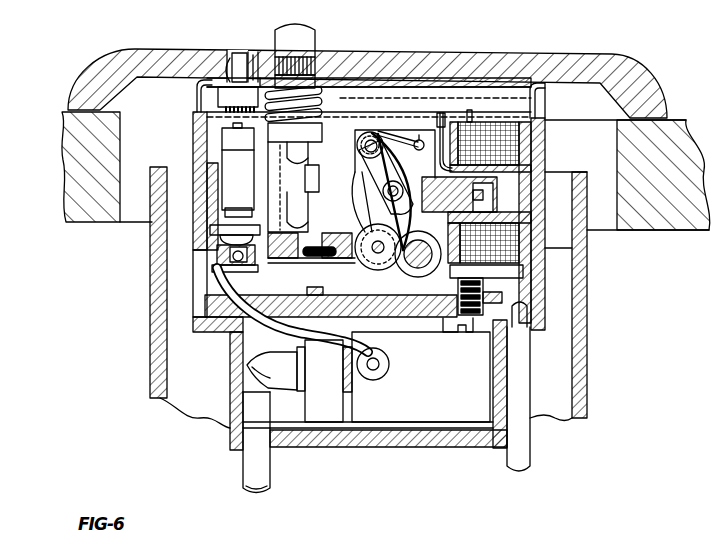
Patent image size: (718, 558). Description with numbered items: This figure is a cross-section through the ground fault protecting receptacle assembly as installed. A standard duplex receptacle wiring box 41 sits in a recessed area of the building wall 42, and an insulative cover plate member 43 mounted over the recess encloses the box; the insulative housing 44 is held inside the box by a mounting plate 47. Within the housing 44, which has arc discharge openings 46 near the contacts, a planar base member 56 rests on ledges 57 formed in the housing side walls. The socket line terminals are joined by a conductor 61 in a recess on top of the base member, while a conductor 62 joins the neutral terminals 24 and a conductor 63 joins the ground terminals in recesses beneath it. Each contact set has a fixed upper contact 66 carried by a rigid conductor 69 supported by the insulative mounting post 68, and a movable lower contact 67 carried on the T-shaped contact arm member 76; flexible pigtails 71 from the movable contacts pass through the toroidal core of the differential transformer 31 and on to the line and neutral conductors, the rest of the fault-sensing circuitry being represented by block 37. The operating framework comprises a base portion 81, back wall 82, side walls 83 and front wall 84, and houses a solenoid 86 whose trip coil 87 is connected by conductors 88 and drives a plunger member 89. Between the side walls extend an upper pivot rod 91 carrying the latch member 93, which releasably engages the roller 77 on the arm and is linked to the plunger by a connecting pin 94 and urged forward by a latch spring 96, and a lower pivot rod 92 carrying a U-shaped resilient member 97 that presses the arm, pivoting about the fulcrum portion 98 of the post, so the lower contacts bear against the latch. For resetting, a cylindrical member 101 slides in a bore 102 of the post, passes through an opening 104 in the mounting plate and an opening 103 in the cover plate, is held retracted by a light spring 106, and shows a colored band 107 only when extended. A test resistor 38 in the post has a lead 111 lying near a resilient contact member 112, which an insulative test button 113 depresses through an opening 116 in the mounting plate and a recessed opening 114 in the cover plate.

The neutral terminal 24 is at (645, 2).
The differential transformer 31 is at (327, 417).
The block 37 is at (375, 405).
The resistor 38 is at (232, 153).
The receptacle wiring box 41 is at (155, 323).
The building wall 42 is at (93, 224).
The cover plate member 43 is at (136, 50).
The housing 44 is at (230, 442).
The arc discharge openings 46 is at (193, 287).
The mounting plate 47 is at (541, 98).
The base member 56 is at (297, 297).
The ledges 57 is at (217, 330).
The conductor 61 is at (356, 268).
The conductor 62 is at (405, 330).
The conductor 63 is at (520, 318).
The fixed upper contact 66 is at (215, 230).
The movable lower contact 67 is at (212, 258).
The insulative mounting post 68 is at (289, 177).
The rigid conductors 69 is at (203, 188).
The flexible conductive pigtails 71 is at (277, 328).
The contact arm member 76 is at (358, 233).
The roller 77 is at (372, 197).
The base portion 81 is at (508, 290).
The back wall 82 is at (546, 248).
The side walls 83 is at (432, 133).
The front wall 84 is at (484, 292).
The solenoid 86 is at (521, 148).
The trip coil 87 is at (491, 133).
The conductors 88 is at (470, 110).
The plunger member 89 is at (545, 173).
The upper pivot rod 91 is at (372, 132).
The lower pivot rod 92 is at (420, 282).
The latch member 93 is at (356, 167).
The connecting pin 94 is at (403, 162).
The latch spring 96 is at (403, 135).
The resilient member 97 is at (305, 262).
The fulcrum portion 98 is at (358, 220).
The cylindrical member 101 is at (310, 36).
The bore 102 is at (312, 150).
The opening 103 is at (326, 55).
The opening 104 is at (348, 85).
The light spring 106 is at (320, 102).
The colored band 107 is at (287, 60).
The resistor lead 111 is at (207, 122).
The resilient contact member 112 is at (200, 106).
The test button 113 is at (249, 60).
The opening 114 is at (240, 60).
The opening 116 is at (227, 72).